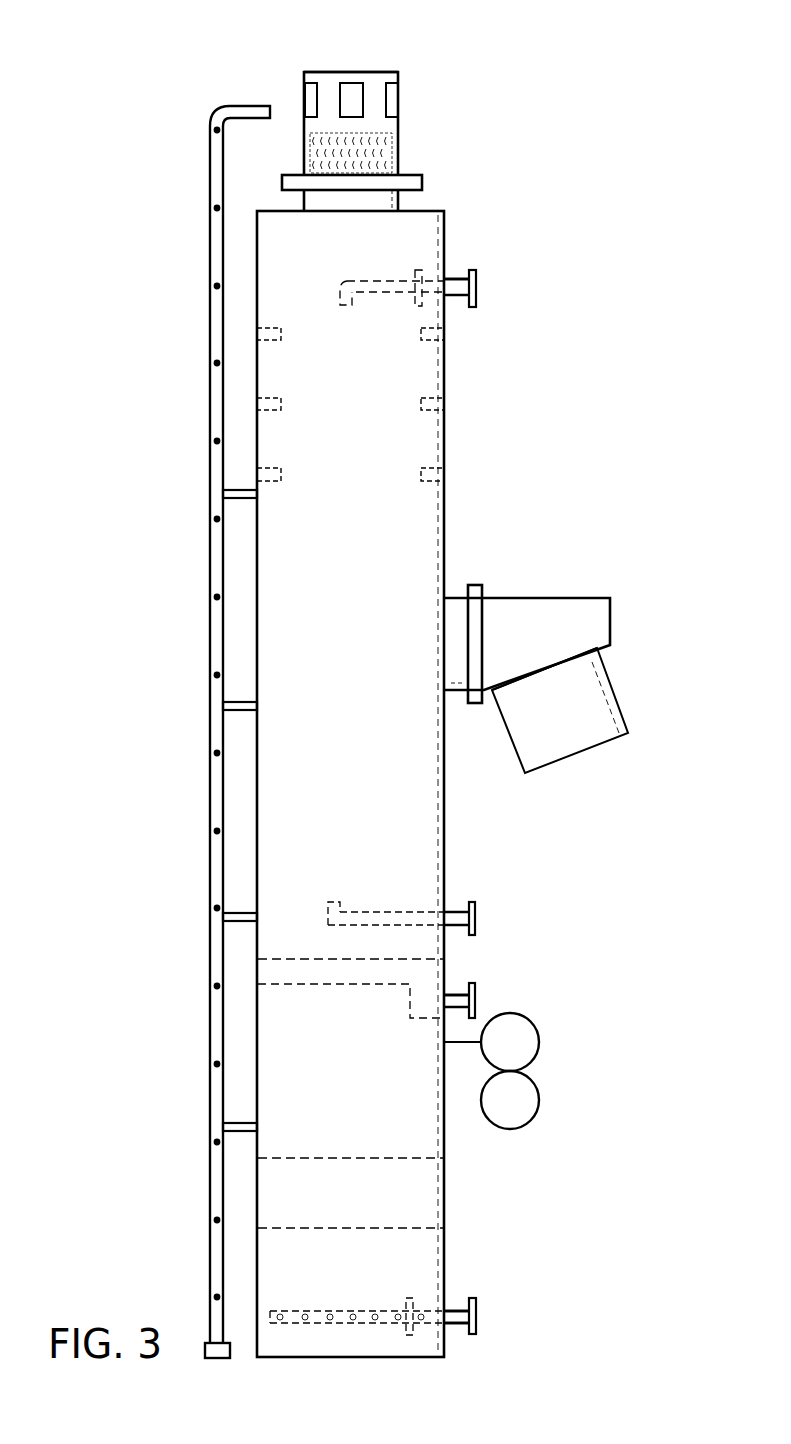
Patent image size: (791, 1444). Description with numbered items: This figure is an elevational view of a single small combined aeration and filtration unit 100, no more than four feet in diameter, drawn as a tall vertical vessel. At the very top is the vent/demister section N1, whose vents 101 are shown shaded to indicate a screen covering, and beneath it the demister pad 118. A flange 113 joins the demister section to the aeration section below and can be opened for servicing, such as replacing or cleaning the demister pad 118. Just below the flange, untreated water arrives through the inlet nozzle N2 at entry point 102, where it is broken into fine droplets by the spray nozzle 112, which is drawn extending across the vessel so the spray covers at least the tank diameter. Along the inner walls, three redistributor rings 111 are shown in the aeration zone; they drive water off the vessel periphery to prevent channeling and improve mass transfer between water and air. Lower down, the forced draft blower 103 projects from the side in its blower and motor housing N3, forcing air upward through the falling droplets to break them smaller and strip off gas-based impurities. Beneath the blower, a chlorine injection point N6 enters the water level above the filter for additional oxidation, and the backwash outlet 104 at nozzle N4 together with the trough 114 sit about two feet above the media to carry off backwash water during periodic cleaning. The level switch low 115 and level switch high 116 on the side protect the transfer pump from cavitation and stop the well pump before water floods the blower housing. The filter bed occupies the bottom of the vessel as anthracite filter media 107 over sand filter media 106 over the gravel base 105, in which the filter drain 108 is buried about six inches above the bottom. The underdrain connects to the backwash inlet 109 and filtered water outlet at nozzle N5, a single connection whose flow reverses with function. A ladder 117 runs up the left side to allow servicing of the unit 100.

The combined aeration and filtration unit 100 is at (622, 116).
The vents 101 is at (394, 62).
The entry point 102 is at (477, 288).
The forced draft blower 103 is at (544, 598).
The backwash outlet 104 is at (477, 997).
The gravel base 105 is at (445, 1270).
The sand filter media 106 is at (445, 1195).
The anthracite filter media 107 is at (445, 1135).
The filter drain 108 is at (318, 1310).
The backwash inlet 109 is at (477, 1318).
The redistributor rings 111 is at (281, 333).
The spray nozzle 112 is at (367, 278).
The flange 113 is at (424, 182).
The trough 114 is at (350, 987).
The level switch low 115 is at (540, 1044).
The level switch high 116 is at (540, 1102).
The ladder 117 is at (210, 737).
The demister pad 118 is at (393, 152).
The vent/demister section N1 is at (312, 62).
The inlet nozzle N2 is at (482, 253).
The blower and motor housing N3 is at (584, 766).
The backwash nozzle N4 is at (479, 969).
The outlet nozzle N5 is at (475, 1348).
The chlorine injection nozzle N6 is at (479, 888).